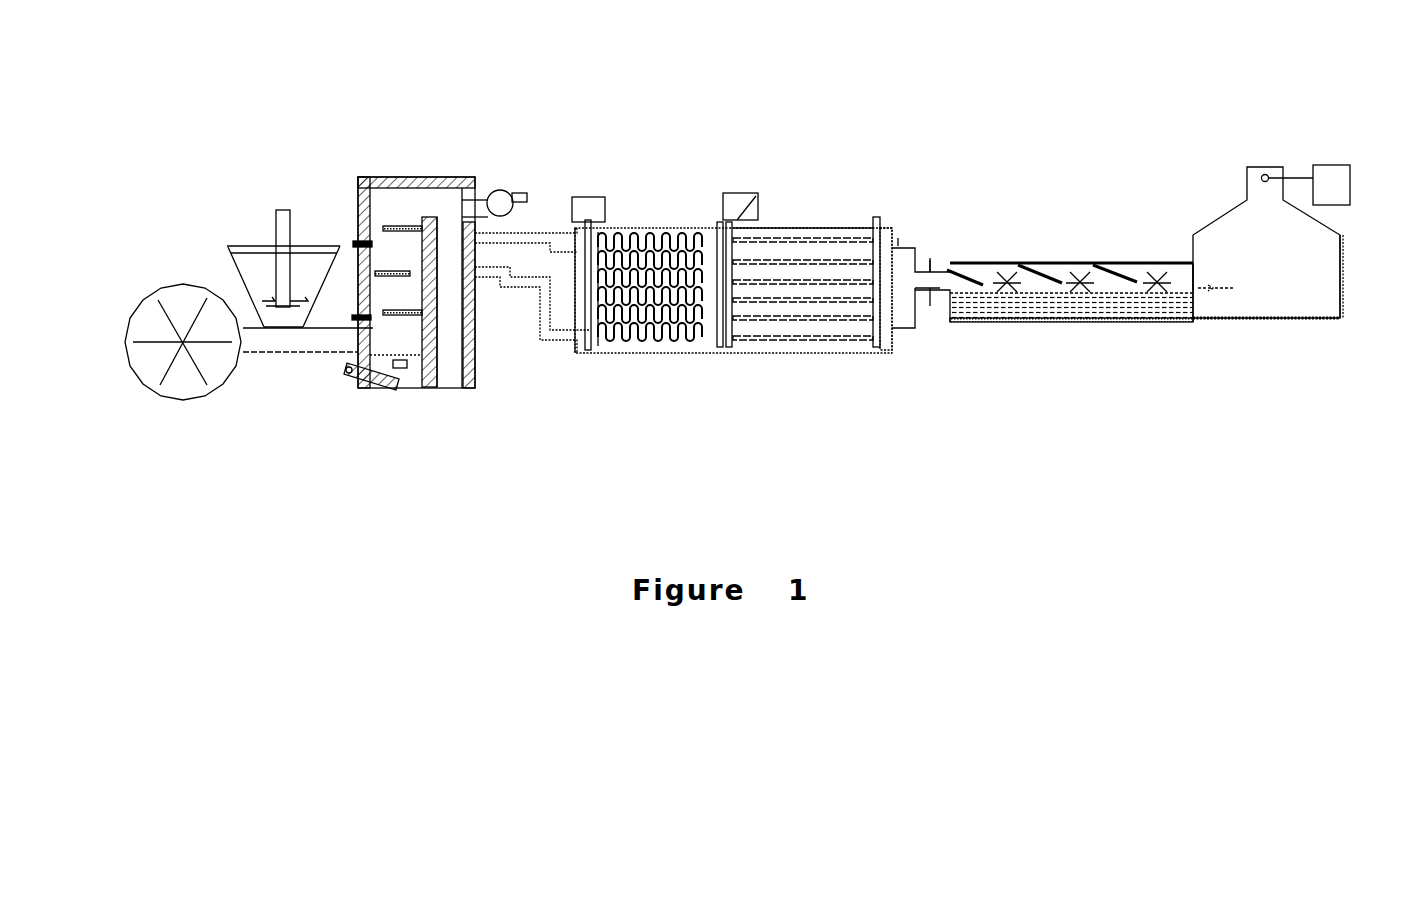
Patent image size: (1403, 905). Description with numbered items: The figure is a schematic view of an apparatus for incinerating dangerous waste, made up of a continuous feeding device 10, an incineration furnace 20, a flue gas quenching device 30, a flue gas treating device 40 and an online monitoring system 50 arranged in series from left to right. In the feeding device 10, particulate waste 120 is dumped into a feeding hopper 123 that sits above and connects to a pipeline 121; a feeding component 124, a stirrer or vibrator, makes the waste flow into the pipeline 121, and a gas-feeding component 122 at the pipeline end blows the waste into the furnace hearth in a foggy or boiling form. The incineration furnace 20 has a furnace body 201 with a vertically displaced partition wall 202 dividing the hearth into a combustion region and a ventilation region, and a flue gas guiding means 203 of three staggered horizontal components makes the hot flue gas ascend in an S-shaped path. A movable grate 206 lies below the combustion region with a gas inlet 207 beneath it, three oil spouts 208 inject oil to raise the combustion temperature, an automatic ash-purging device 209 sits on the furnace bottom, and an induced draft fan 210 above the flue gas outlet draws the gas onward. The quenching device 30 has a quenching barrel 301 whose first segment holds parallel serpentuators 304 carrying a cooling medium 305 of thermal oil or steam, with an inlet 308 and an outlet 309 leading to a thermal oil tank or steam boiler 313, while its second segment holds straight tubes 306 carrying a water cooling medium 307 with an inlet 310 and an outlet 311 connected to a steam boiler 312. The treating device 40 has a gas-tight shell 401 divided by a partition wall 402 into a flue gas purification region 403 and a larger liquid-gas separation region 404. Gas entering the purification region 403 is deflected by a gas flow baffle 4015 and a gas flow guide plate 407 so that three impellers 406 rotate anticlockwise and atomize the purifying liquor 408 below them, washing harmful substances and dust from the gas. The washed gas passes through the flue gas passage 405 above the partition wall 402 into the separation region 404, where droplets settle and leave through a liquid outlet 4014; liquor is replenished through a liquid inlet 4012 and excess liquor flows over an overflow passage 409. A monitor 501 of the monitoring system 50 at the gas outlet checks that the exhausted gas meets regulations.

The continuous feeding device 10 is at (212, 306).
The particulate waste 120 is at (267, 330).
The pipeline 121 is at (332, 342).
The gas-feeding component 122 is at (152, 320).
The feeding hopper 123 is at (255, 280).
The feeding component 124 is at (278, 233).
The incineration furnace 20 is at (457, 285).
The furnace body 201 is at (423, 178).
The partition wall 202 is at (428, 222).
The flue gas guiding means 203 is at (398, 228).
The movable grate 206 is at (452, 330).
The gas inlet 207 is at (402, 367).
The oil spouts 208 is at (355, 240).
The automatic ash-purging device 209 is at (380, 388).
The induced draft fan 210 is at (492, 190).
The flue gas quenching device 30 is at (728, 244).
The quenching barrel 301 is at (773, 222).
The serpentuators 304 is at (670, 222).
The cooling medium 305 is at (635, 222).
The straight tubes 306 is at (820, 222).
The cooling medium 307 is at (862, 222).
The inlet 308 is at (718, 222).
The outlet 309 is at (585, 223).
The inlet 310 is at (873, 220).
The outlet 311 is at (756, 196).
The steam boiler 312 is at (733, 202).
The thermal oil tank or steam boiler 313 is at (595, 203).
The flue gas treating device 40 is at (1052, 252).
The gas-tight shell 401 is at (1190, 262).
The partition wall 402 is at (1175, 263).
The flue gas purification region 403 is at (1060, 270).
The impellers 406 is at (1153, 287).
The gas flow guide plate 407 is at (1115, 272).
The purifying liquor 408 is at (990, 290).
The liquid inlet 4012 is at (997, 263).
The liquid outlet 4014 is at (1387, 273).
The gas flow baffle 4015 is at (980, 283).
The liquid-gas separation region 404 is at (1295, 208).
The flue gas passage 405 is at (1194, 265).
The overflow passage 409 is at (1196, 290).
The online monitoring system 50 is at (1323, 170).
The monitor 501 is at (1268, 175).